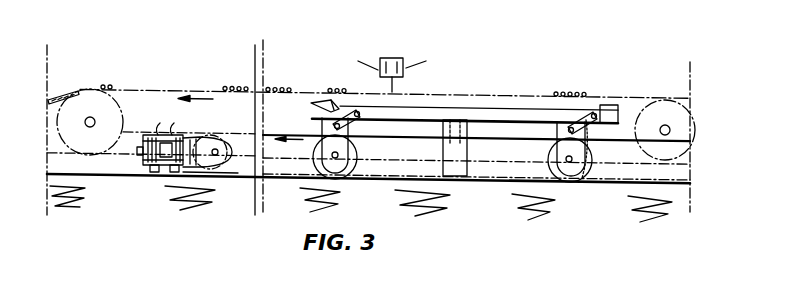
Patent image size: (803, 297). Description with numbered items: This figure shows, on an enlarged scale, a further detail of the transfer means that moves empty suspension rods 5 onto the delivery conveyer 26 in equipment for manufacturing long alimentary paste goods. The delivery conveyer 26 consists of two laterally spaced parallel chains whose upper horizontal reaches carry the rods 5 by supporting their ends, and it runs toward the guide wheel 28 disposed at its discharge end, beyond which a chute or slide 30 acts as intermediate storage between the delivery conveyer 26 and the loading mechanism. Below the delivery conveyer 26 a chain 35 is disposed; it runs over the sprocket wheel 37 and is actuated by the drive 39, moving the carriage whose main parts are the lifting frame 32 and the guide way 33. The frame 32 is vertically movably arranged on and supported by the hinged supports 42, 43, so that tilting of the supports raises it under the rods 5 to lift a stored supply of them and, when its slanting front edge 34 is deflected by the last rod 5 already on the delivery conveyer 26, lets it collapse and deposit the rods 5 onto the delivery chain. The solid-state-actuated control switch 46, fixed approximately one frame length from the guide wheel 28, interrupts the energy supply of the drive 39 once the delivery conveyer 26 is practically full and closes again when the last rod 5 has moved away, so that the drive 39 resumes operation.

The suspension rods 5 is at (108, 87).
The delivery conveyer 26 is at (634, 98).
The guide wheel 28 is at (686, 106).
The chute or slide 30 is at (52, 99).
The lifting frame 32 is at (458, 107).
The guide way 33 is at (466, 176).
The slanting front edge 34 is at (321, 109).
The chain 35 is at (284, 177).
The sprocket wheel 37 is at (226, 176).
The drive 39 is at (160, 173).
The hinged supports 42 is at (352, 112).
The hinged supports 43 is at (588, 110).
The solid-state-actuated control switch 46 is at (397, 52).